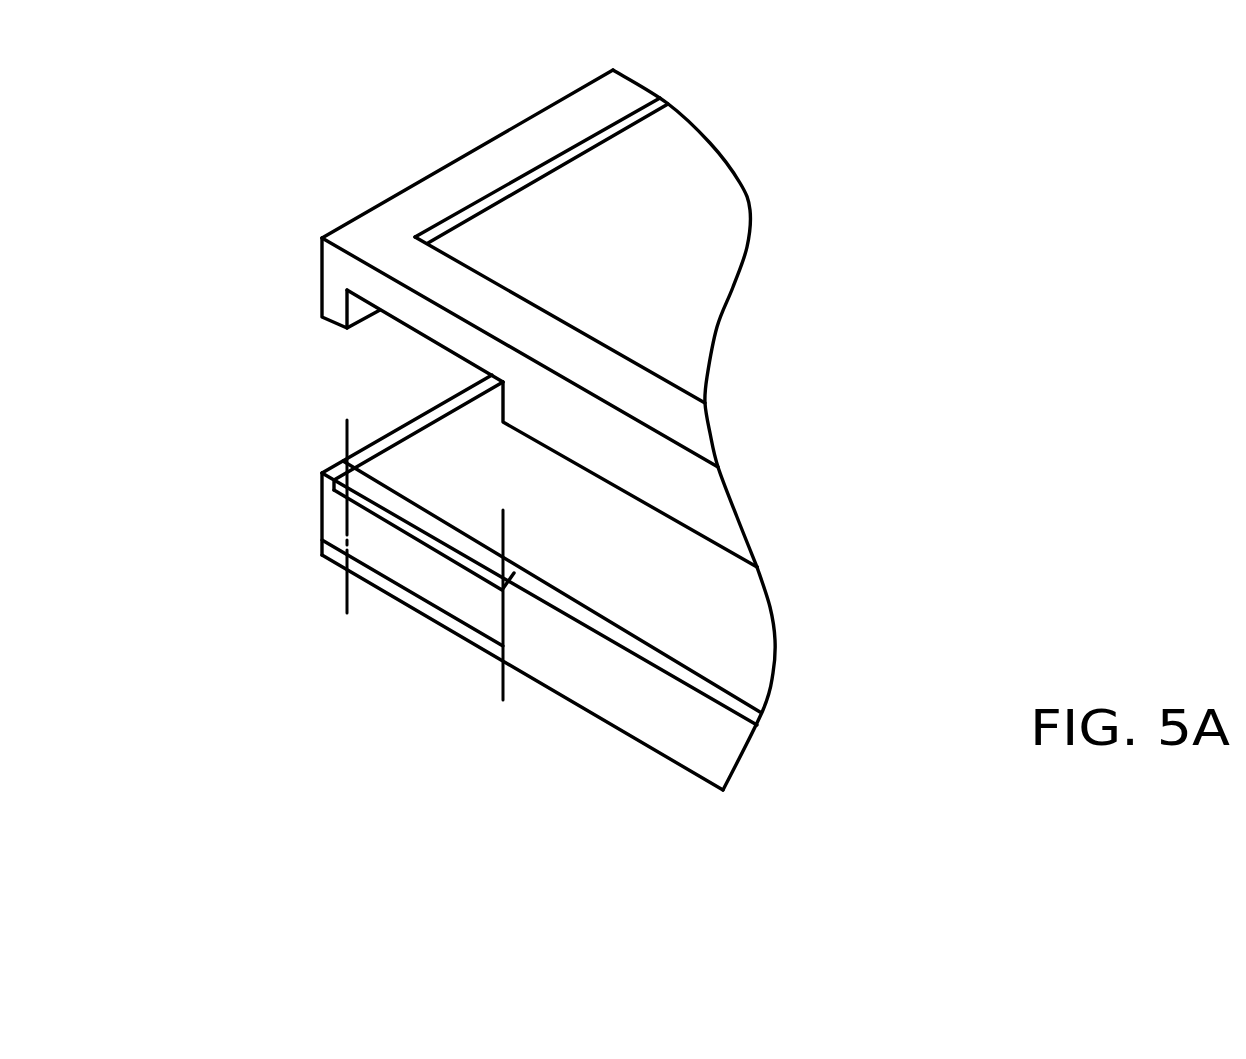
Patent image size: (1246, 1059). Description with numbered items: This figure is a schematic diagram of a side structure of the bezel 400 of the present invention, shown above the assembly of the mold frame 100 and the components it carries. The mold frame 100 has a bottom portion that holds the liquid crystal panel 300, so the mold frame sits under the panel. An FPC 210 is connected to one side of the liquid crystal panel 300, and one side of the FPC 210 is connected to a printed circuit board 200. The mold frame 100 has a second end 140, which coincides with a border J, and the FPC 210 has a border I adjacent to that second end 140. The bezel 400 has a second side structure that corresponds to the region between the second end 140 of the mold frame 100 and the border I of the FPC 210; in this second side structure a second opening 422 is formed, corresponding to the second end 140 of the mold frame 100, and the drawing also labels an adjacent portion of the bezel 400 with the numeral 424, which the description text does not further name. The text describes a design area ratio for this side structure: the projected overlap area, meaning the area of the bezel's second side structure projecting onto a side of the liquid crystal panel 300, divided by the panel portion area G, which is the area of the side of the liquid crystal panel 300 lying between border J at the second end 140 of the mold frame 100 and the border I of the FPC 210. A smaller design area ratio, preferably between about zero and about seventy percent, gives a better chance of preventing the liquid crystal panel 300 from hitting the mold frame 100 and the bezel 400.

The bezel 400 is at (461, 173).
The second opening 422 is at (410, 349).
The protrusion of top chassis 424 is at (507, 395).
The liquid crystal panel 300 is at (738, 647).
The second end 140 is at (322, 475).
The mold frame 100 is at (415, 574).
The printed circuit board 200 is at (460, 630).
The FPC 210 is at (588, 693).
The border J is at (349, 538).
The border I is at (507, 630).
The panel portion area G is at (397, 508).